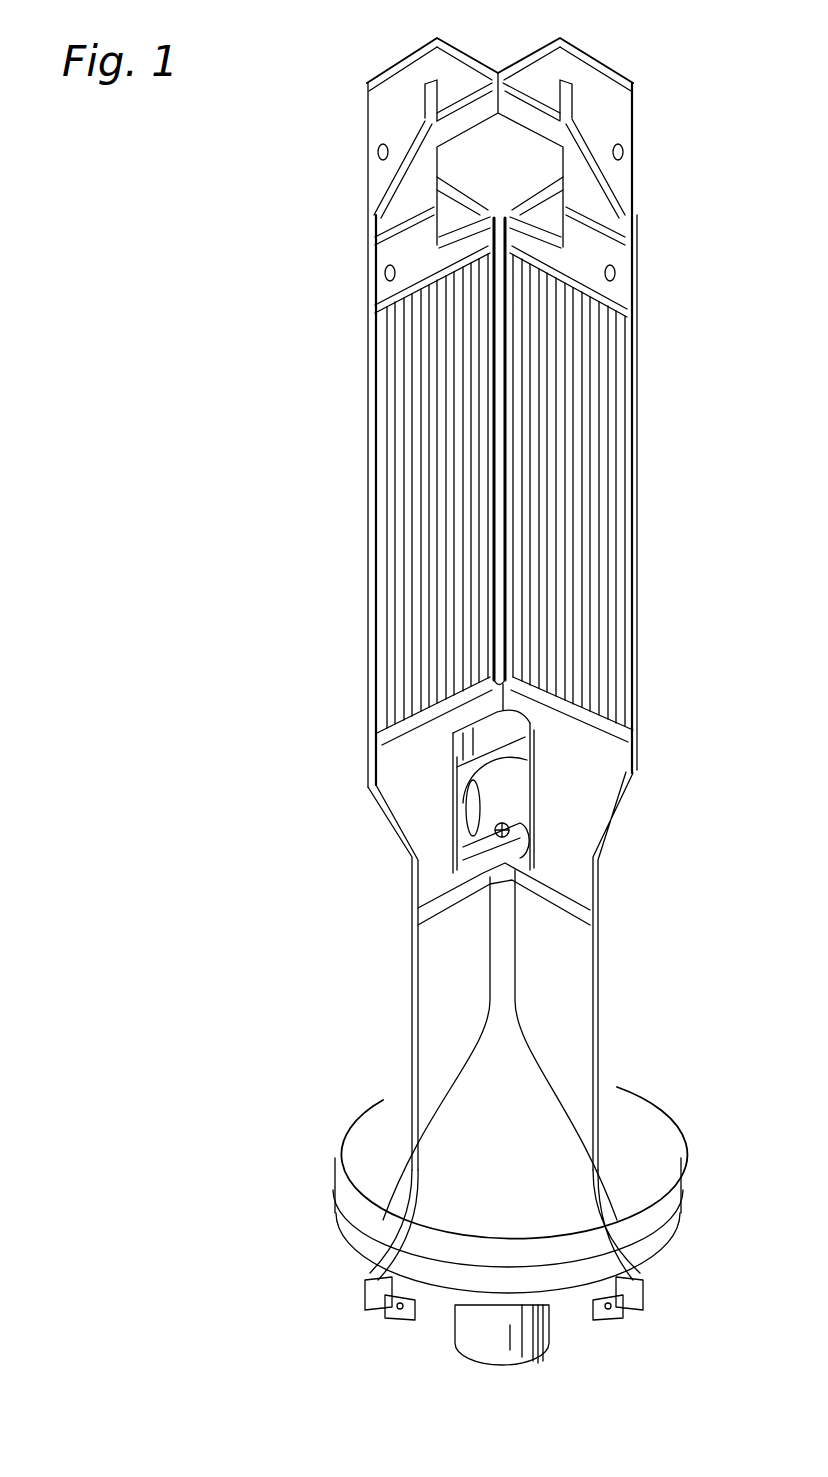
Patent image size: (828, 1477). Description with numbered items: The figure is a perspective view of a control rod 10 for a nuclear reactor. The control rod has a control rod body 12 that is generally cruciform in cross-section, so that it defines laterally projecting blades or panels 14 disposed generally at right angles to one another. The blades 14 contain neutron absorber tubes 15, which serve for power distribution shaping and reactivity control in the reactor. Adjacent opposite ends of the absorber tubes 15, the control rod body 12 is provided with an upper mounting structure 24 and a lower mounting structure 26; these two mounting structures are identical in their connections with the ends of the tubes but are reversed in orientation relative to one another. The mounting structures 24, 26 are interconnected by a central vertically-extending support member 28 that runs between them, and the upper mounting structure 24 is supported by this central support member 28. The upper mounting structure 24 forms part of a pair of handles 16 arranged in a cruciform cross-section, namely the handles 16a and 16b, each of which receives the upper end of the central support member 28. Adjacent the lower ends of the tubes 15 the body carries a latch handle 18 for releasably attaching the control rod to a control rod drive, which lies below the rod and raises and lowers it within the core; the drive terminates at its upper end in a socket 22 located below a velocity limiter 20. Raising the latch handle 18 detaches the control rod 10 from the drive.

The control rod 10 is at (288, 606).
The control rod body 12 is at (580, 662).
The blades or panels 14 is at (635, 455).
The neutron absorber tubes 15 is at (594, 506).
The handles 16 is at (367, 143).
The handle 16a is at (478, 83).
The handle 16b is at (590, 203).
The latch handle 18 is at (473, 818).
The velocity limiter 20 is at (623, 1104).
The socket 22 is at (462, 1332).
The upper mounting structure 24 is at (606, 287).
The lower mounting structure 26 is at (607, 773).
The central support member 28 is at (488, 378).